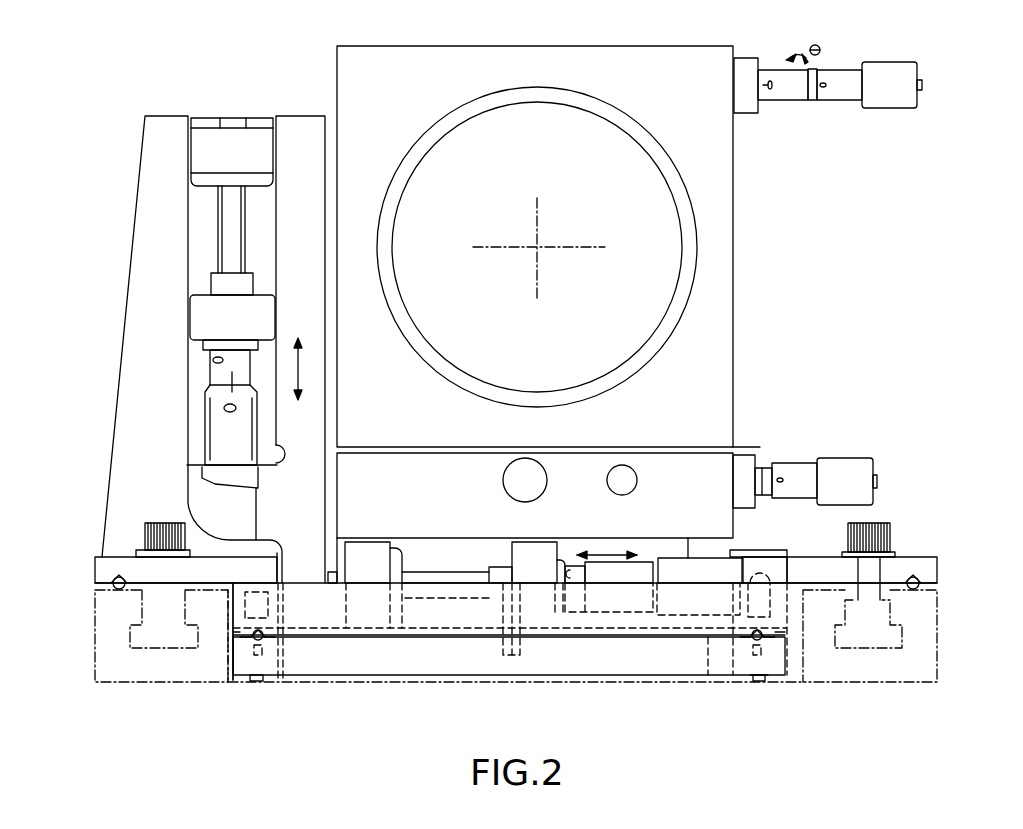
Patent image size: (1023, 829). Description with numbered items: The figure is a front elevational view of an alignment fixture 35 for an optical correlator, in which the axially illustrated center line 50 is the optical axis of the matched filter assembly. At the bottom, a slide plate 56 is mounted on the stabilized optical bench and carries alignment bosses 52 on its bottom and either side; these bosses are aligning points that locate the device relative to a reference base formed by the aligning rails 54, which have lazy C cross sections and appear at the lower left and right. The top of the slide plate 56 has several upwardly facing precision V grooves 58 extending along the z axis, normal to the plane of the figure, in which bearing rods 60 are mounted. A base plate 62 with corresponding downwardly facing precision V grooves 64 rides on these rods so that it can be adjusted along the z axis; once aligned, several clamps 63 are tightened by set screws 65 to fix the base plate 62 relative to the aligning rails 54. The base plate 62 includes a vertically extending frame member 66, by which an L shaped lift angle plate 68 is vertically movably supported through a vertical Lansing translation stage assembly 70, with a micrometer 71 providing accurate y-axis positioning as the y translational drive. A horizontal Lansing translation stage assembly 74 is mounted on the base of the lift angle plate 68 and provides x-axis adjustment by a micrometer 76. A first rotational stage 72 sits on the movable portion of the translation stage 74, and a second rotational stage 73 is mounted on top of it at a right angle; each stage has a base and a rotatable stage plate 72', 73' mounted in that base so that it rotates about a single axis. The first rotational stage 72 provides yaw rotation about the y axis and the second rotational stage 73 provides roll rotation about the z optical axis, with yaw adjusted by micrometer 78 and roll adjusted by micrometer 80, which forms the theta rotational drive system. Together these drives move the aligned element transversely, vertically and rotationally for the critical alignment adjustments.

The positioning stage assembly 35 is at (812, 237).
The optical axis 50 is at (540, 246).
The alignment bosses 52 is at (246, 678).
The aligning rails 54 is at (150, 682).
The slide plate 56 is at (416, 669).
The V grooves 58 is at (259, 641).
The bearing rods 60 is at (278, 632).
The base plate 62 is at (460, 624).
The clamps 63 is at (96, 568).
The V grooves 64 is at (233, 631).
The set screws 65 is at (145, 533).
The vertically extending frame member 66 is at (177, 265).
The L shaped lift angle plate 68 is at (316, 265).
The vertical Lansing translation stage assembly 70 is at (249, 113).
The micrometer 71 is at (242, 442).
The first rotational stage 72 is at (535, 518).
The rotatable stage plate 72' is at (782, 425).
The second rotational stage 73 is at (535, 246).
The rotatable stage plate 73' is at (537, 247).
The horizontal Lansing translation stage assembly 74 is at (382, 575).
The micrometer 76 is at (640, 584).
The micrometer 78 is at (838, 458).
The micrometer 80 is at (902, 108).